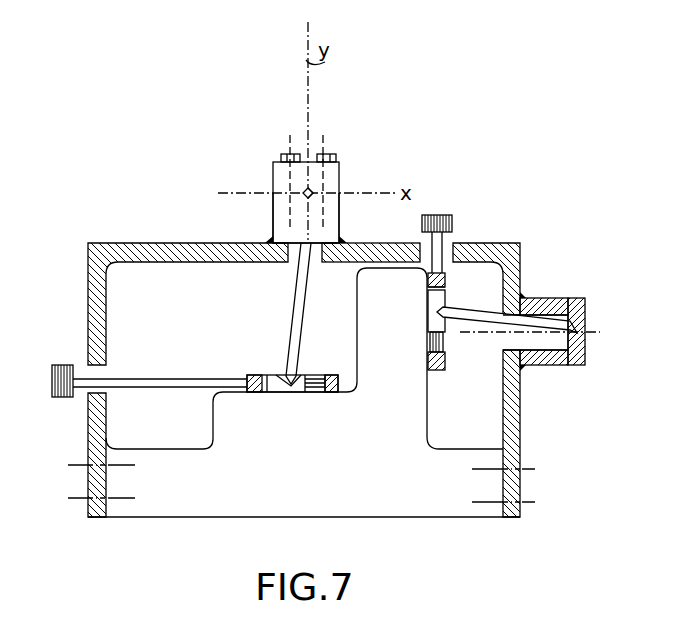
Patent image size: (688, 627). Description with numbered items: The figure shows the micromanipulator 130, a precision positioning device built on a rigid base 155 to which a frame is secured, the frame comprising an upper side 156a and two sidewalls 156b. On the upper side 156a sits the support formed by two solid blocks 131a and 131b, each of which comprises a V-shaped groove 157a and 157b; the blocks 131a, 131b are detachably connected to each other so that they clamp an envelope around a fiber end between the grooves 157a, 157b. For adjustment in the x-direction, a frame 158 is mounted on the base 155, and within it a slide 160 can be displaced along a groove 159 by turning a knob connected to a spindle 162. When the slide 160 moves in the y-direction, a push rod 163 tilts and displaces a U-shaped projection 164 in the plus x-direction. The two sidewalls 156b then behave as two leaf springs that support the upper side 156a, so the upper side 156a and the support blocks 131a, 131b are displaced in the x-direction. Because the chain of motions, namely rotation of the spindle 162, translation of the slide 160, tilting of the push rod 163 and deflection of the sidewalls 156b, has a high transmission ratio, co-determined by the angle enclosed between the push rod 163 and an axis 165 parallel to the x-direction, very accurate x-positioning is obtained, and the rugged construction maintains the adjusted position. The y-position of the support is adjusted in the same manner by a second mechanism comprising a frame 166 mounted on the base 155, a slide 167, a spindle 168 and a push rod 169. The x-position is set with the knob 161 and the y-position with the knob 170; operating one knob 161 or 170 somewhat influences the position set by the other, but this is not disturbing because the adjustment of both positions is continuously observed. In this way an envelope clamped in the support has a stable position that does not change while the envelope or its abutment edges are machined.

The micromanipulator 130 is at (438, 190).
The solid block 131a is at (282, 204).
The solid block 131b is at (282, 172).
The rigid base 155 is at (183, 491).
The upper side of the frame 156a is at (142, 256).
The sidewalls 156b is at (96, 324).
The V-shaped groove 157a is at (312, 196).
The V-shaped groove 157b is at (312, 190).
The frame 158 is at (428, 358).
The groove 159 is at (432, 341).
The slide 160 is at (437, 301).
The knob 161 is at (445, 213).
The spindle 162 is at (445, 271).
The push rod 163 is at (483, 320).
The U-shaped projection 164 is at (553, 306).
The axis 165 is at (597, 332).
The frame 166 is at (333, 374).
The slide 167 is at (276, 374).
The spindle 168 is at (177, 386).
The push rod 169 is at (298, 306).
The knob 170 is at (62, 396).